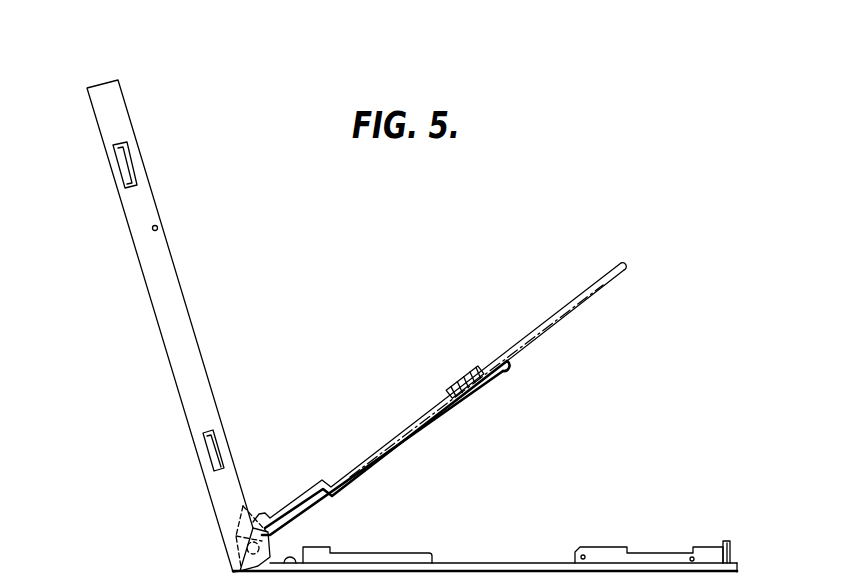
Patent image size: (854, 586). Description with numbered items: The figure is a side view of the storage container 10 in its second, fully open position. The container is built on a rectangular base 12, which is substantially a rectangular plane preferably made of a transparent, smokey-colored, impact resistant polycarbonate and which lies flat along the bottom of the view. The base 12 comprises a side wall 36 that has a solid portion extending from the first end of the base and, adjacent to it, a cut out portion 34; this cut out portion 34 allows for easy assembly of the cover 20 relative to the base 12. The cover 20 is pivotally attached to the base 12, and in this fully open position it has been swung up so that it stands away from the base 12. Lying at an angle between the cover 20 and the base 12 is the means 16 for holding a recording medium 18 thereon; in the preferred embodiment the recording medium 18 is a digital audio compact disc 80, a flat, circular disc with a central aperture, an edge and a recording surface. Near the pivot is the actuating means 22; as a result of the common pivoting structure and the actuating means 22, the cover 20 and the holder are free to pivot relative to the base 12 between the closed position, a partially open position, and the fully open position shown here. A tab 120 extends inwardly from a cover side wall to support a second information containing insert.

The storage container 10 is at (692, 313).
The rectangular base 12 is at (517, 563).
The means for holding a recording medium 16 is at (483, 387).
The recording medium 18 is at (594, 282).
The cover 20 is at (162, 303).
The actuating means 22 is at (244, 505).
The cut out portion 34 is at (292, 566).
The side wall 36 is at (427, 558).
The compact disc 80 is at (519, 341).
The tab 120 is at (133, 166).